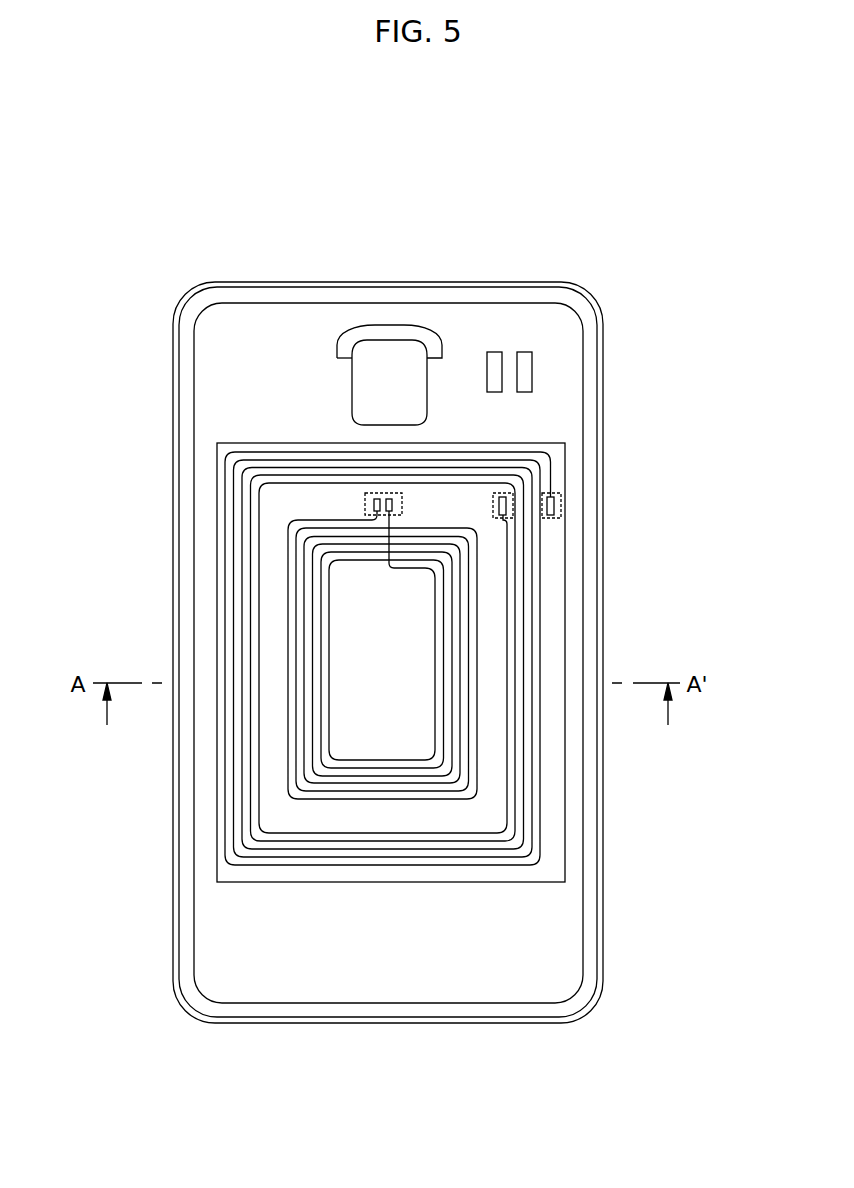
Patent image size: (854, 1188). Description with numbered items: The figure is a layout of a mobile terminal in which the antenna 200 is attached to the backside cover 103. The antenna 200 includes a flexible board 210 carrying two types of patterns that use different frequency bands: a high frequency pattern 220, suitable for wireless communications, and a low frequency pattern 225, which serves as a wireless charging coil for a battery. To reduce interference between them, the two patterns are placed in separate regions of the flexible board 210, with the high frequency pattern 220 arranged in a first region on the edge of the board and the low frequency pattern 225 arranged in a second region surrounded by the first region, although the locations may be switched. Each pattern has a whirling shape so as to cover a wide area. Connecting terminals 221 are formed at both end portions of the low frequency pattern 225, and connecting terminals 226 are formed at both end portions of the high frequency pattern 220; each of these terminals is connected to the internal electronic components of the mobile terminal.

The backside cover 103 is at (500, 313).
The antenna 200 is at (582, 526).
The flexible board 210 is at (550, 573).
The high frequency pattern 220 is at (235, 555).
The connecting terminals 221 is at (503, 497).
The low frequency pattern 225 is at (295, 710).
The connecting terminals 226 is at (377, 499).